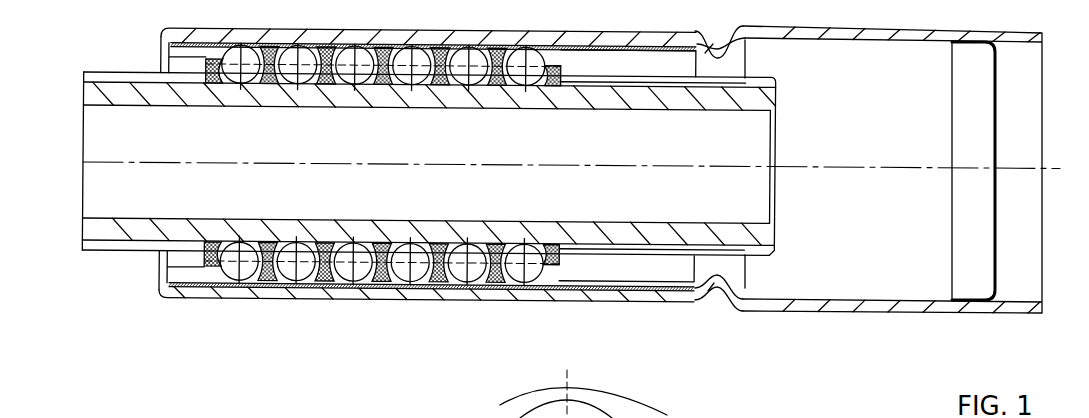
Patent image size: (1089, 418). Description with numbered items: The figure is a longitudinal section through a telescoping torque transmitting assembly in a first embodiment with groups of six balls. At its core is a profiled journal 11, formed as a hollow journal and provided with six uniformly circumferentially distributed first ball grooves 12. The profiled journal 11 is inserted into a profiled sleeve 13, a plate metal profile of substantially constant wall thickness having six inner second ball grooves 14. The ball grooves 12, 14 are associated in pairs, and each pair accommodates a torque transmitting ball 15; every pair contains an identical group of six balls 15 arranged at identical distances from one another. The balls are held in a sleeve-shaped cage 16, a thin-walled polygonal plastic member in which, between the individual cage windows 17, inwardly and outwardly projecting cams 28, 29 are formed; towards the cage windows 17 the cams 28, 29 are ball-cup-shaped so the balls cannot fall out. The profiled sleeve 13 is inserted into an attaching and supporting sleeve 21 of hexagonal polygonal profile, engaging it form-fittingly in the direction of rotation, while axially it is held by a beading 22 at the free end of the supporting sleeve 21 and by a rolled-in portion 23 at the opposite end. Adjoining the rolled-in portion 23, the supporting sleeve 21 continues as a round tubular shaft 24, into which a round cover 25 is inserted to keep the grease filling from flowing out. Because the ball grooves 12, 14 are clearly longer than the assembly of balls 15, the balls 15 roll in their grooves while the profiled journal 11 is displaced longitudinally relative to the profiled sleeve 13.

The profiled journal 11 is at (108, 232).
The first ball grooves 12 is at (137, 242).
The profiled sleeve 13 is at (577, 285).
The second ball grooves 14 is at (615, 275).
The torque transmitting ball 15 is at (347, 270).
The cage 16 is at (380, 262).
The cage windows 17 is at (410, 262).
The supporting sleeve 21 is at (648, 295).
The beading 22 is at (158, 270).
The rolled-in portion 23 is at (722, 292).
The tubular shaft 24 is at (862, 307).
The cover 25 is at (993, 302).
The inwardly projecting cams 28 is at (208, 270).
The outwardly projecting cams 29 is at (263, 280).